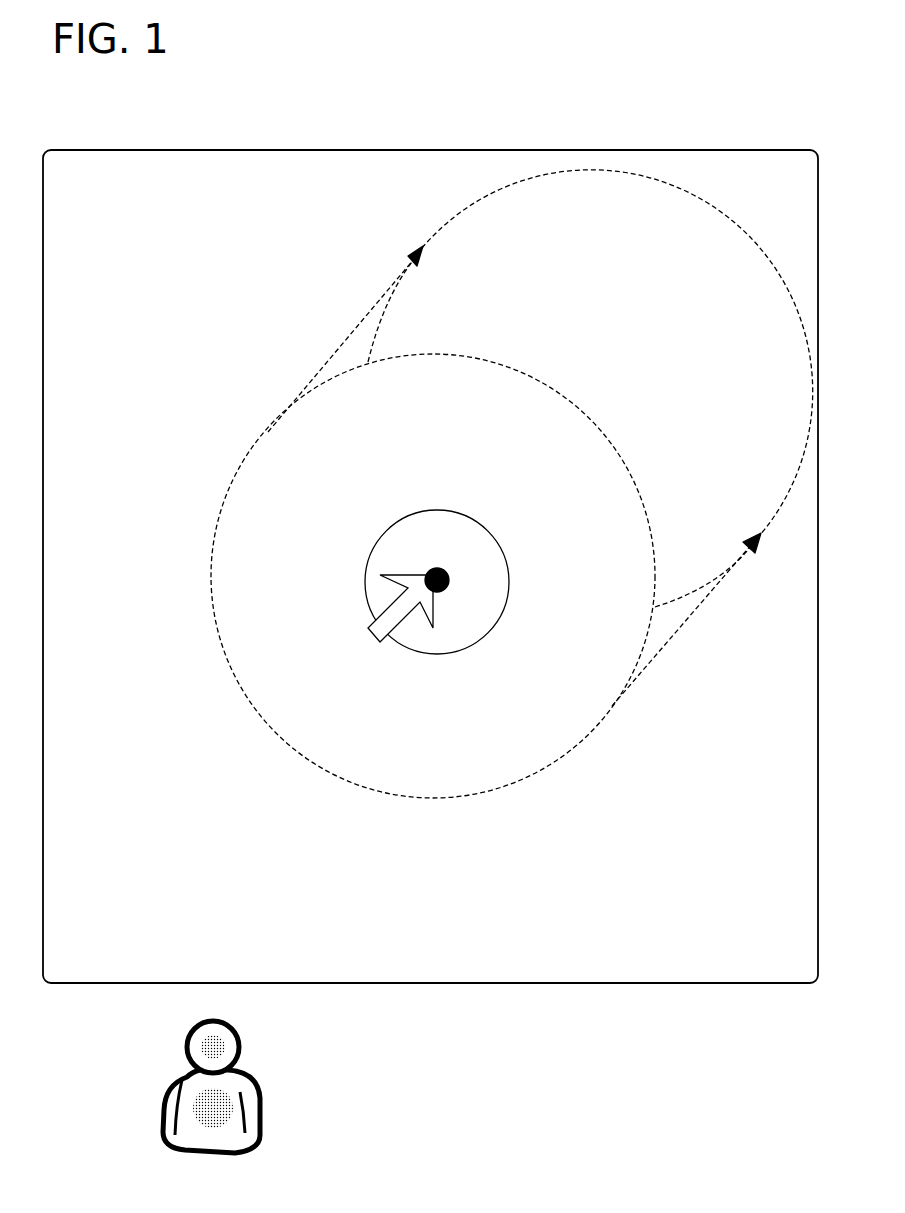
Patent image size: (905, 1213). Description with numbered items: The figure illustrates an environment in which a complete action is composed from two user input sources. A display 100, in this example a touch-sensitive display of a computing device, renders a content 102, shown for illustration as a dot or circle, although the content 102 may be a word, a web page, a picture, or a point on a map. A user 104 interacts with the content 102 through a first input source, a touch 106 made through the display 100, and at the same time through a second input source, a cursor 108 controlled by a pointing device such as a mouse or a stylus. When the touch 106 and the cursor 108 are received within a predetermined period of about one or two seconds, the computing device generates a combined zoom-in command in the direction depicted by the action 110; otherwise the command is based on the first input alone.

The display 100 is at (163, 232).
The content 102 is at (449, 582).
The user 104 is at (228, 1030).
The touch 106 is at (483, 523).
The cursor 108 is at (368, 628).
The action 110 is at (430, 795).